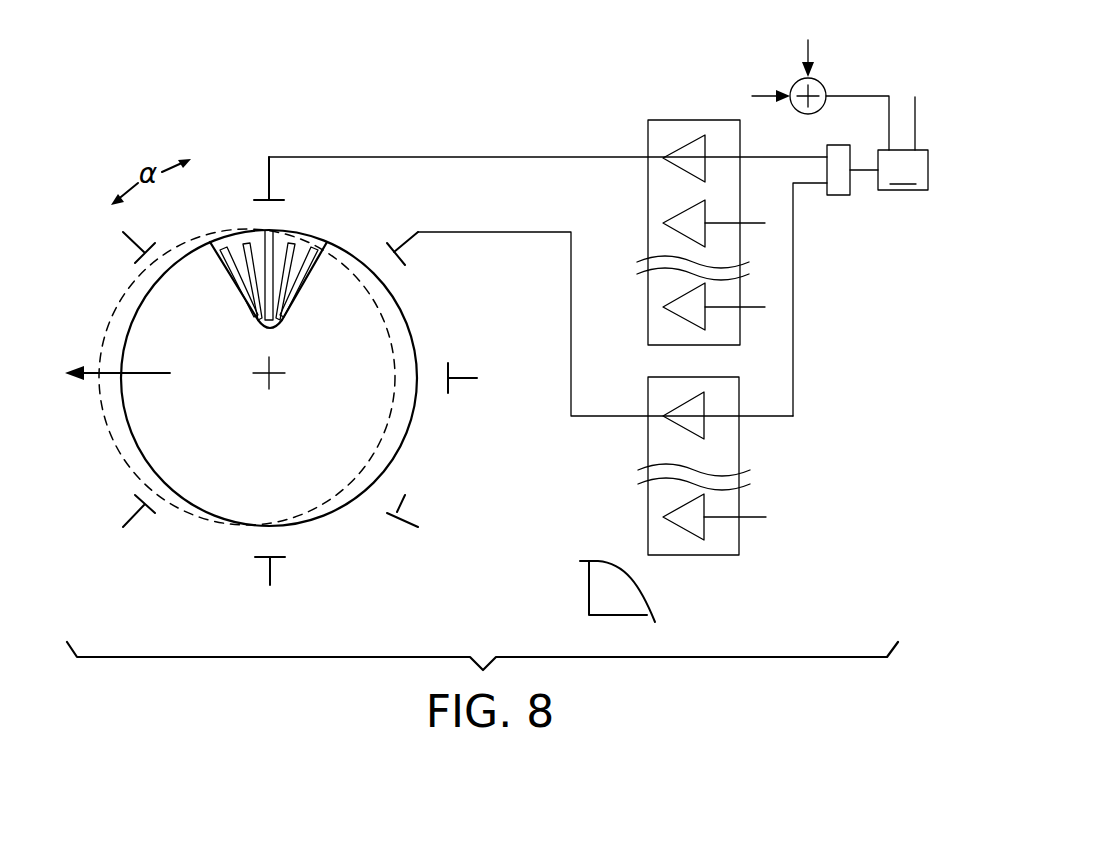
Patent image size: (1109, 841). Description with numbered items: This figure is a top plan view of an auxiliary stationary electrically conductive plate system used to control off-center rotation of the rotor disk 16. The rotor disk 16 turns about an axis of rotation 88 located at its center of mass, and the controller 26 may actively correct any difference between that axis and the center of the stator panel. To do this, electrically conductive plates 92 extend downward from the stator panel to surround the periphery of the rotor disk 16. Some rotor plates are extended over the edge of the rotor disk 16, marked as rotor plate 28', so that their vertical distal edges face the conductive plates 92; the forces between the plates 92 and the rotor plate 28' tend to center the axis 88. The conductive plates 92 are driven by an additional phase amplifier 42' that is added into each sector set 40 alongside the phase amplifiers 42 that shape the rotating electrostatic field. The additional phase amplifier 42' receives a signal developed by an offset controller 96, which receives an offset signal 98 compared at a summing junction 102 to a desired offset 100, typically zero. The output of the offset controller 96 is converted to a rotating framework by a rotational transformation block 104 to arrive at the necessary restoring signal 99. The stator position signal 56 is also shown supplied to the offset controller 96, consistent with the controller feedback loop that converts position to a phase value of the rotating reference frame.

The rotor disk 16 is at (243, 508).
The controller 26 is at (588, 589).
The rotor plate 28' is at (278, 214).
The sector set 40 is at (740, 325).
The phase amplifier 42 is at (676, 466).
The additional phase amplifier 42' is at (677, 205).
The stator position signal 56 is at (917, 122).
The axis of rotation 88 is at (271, 378).
The electrically conductive plate 92 is at (265, 197).
The offset controller 96 is at (877, 143).
The offset signal 98 is at (808, 50).
The restoring signal 99 is at (765, 157).
The desired offset 100 is at (765, 95).
The summing junction 102 is at (822, 82).
The rotational transformation block 104 is at (838, 195).